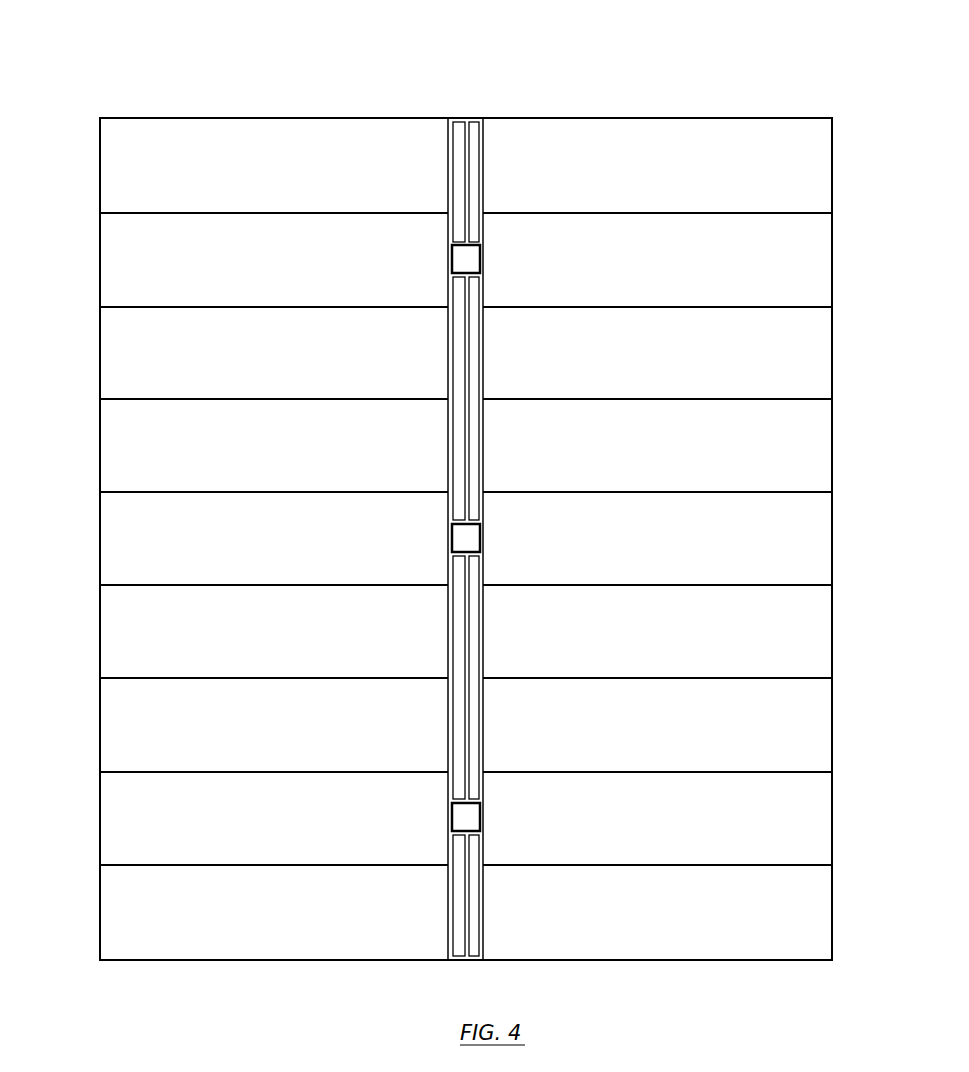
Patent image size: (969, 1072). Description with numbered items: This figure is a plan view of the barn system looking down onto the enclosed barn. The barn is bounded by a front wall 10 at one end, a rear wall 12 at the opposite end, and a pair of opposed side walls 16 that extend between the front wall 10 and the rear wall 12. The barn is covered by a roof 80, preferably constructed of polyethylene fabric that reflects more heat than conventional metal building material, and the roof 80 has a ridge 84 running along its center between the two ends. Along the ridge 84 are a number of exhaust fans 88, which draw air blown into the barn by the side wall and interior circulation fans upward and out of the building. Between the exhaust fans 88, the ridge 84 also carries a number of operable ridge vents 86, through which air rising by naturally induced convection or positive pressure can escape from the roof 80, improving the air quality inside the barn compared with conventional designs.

The front wall 10 is at (357, 962).
The rear wall 12 is at (588, 117).
The side walls 16 is at (98, 372).
The roof 80 is at (803, 180).
The ridge 84 is at (448, 117).
The operable ridge vents 86 is at (460, 184).
The exhaust fans 88 is at (460, 262).